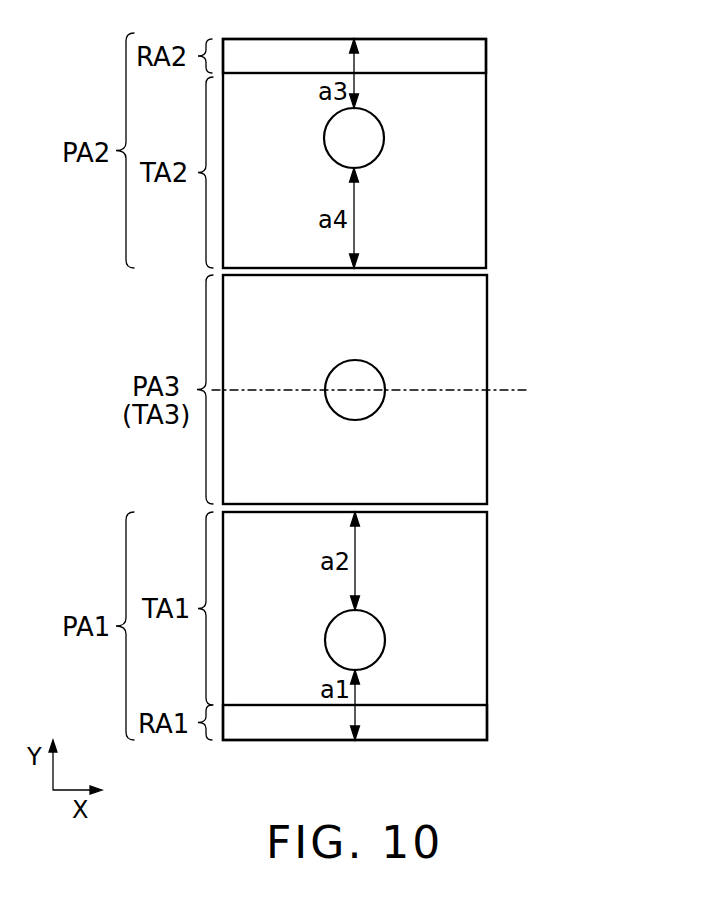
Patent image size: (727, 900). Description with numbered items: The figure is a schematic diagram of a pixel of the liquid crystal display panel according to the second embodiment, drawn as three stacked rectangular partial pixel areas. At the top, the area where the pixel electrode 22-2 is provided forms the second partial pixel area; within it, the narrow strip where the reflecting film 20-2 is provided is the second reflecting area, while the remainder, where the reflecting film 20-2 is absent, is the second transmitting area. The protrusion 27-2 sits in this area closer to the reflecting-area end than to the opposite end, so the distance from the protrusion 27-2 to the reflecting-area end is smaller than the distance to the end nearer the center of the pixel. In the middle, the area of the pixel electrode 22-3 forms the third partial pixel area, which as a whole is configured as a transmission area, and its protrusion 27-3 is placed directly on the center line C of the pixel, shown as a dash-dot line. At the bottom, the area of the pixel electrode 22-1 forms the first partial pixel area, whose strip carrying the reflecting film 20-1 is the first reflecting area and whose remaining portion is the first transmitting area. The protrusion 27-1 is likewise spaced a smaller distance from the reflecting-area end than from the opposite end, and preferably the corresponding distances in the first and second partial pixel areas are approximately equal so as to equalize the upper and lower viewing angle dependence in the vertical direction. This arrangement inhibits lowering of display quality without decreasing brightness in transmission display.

The reflecting film 20-1 is at (487, 723).
The reflecting film 20-2 is at (487, 57).
The pixel electrode 22-1 is at (487, 558).
The pixel electrode 22-2 is at (487, 213).
The pixel electrode 22-3 is at (487, 318).
The protrusion 27-1 is at (385, 636).
The protrusion 27-2 is at (384, 134).
The protrusion 27-3 is at (385, 382).
The center line C is at (383, 391).